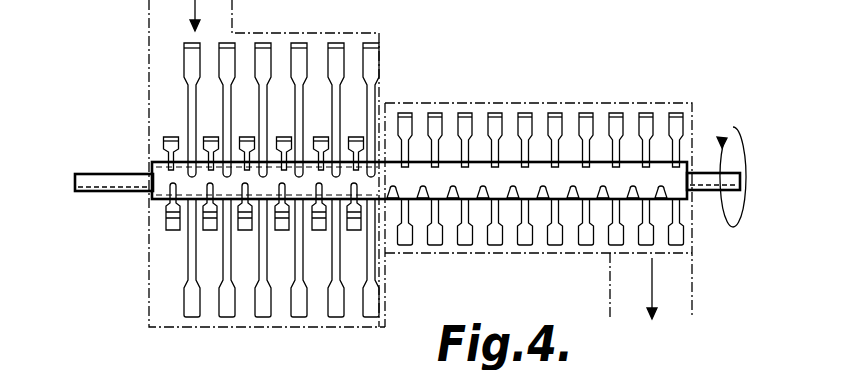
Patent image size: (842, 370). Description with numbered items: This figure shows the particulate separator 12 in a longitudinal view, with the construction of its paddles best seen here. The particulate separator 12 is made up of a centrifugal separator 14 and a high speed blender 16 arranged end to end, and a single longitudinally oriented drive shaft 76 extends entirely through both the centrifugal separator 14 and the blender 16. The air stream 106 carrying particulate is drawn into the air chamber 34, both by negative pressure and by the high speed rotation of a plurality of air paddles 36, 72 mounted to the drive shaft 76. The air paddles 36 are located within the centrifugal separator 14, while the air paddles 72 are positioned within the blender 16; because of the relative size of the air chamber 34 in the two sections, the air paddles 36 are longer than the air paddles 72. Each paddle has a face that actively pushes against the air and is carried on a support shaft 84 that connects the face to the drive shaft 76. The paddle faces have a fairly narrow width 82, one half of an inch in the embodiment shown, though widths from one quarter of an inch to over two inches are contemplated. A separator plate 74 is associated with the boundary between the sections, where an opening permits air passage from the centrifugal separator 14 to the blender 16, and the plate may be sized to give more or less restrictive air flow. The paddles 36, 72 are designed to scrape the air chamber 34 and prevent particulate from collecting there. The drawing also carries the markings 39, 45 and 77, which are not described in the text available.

The particulate separator 12 is at (131, 124).
The centrifugal separator 14 is at (386, 24).
The blender 16 is at (553, 98).
The air chamber 34 is at (246, 50).
The air paddles 36 is at (307, 58).
The tube 39 is at (240, 316).
The boundary 45 is at (622, 104).
The air paddles 72 is at (627, 118).
The separator plate 74 is at (396, 254).
The drive shaft 76 is at (702, 163).
The nozzle 77 is at (394, 145).
The width 82 is at (367, 318).
The support shaft 84 is at (195, 252).
The air stream 106 is at (193, 10).